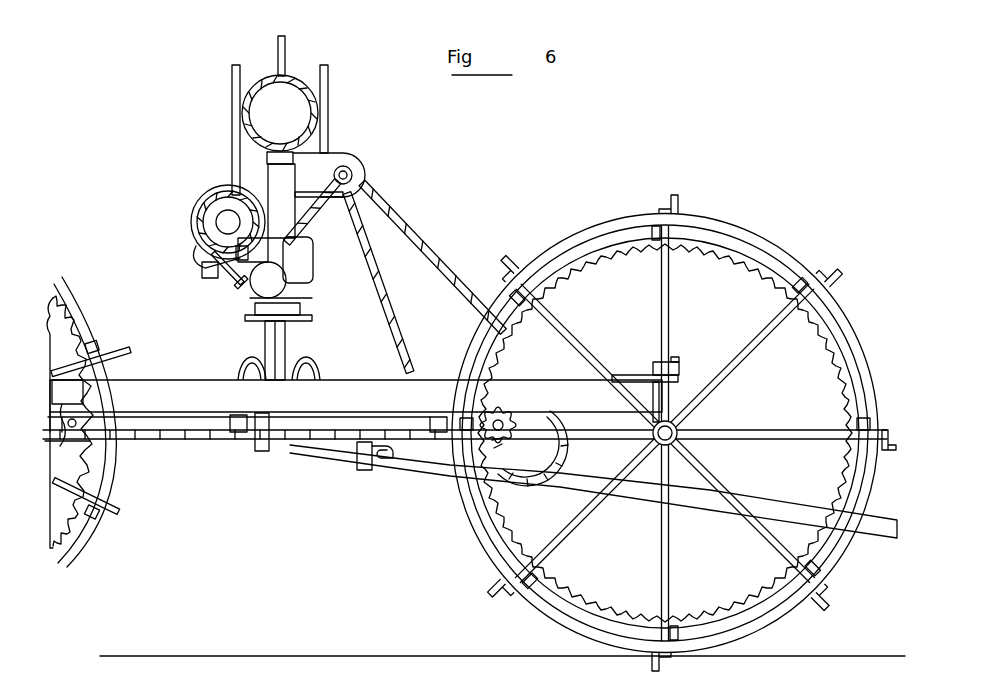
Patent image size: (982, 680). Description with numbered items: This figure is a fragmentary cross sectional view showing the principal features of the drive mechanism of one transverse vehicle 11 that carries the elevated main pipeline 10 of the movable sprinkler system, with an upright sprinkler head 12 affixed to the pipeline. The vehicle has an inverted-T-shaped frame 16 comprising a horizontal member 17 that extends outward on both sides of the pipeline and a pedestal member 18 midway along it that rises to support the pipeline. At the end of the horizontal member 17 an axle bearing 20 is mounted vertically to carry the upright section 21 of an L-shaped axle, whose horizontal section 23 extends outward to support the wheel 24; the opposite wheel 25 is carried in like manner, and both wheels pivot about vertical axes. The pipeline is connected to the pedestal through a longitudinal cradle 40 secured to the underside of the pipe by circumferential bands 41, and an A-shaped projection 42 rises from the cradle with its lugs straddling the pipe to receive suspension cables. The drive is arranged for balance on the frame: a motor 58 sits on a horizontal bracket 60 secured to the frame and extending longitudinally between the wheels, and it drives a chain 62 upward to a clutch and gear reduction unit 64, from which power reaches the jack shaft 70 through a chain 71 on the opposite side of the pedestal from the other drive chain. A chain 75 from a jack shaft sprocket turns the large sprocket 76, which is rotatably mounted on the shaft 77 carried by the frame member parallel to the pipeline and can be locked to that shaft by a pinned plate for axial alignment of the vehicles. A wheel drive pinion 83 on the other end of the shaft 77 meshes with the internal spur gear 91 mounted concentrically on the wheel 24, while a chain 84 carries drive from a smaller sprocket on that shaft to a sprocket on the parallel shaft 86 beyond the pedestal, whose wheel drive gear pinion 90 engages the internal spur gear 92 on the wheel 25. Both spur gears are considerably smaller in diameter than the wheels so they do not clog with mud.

The main pipeline 10 is at (292, 72).
The transverse vehicle 11 is at (470, 177).
The sprinkler head 12 is at (282, 44).
The frame 16 is at (160, 378).
The horizontal member 17 is at (200, 381).
The pedestal member 18 is at (300, 350).
The axle bearing 20 is at (676, 385).
The upright section 21 is at (675, 365).
The horizontal section 23 is at (678, 430).
The wheel 24 is at (661, 433).
The wheel 25 is at (78, 439).
The longitudinal cradle 40 is at (268, 160).
The circumferential band 41 is at (322, 88).
The A-shaped projection 42 is at (232, 84).
The motor 58 is at (312, 282).
The horizontal bracket 60 is at (258, 322).
The chain 62 is at (222, 278).
The clutch and gear reduction unit 64 is at (200, 205).
The jack shaft 70 is at (352, 170).
The chain 71 is at (328, 226).
The chain 75 is at (424, 276).
The large sprocket 76 is at (515, 485).
The shaft 77 is at (497, 440).
The wheel drive pinion 83 is at (505, 410).
The chain 84 is at (195, 440).
The shaft 86 is at (75, 445).
The wheel drive gear pinion 90 is at (70, 418).
The internal spur gear 91 is at (558, 586).
The internal spur gear 92 is at (52, 565).